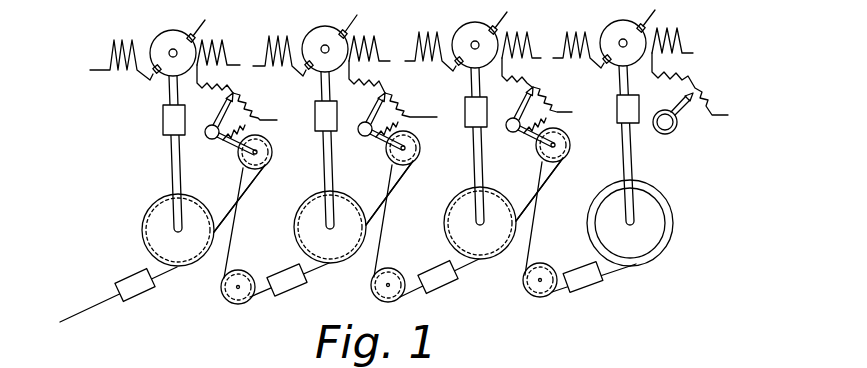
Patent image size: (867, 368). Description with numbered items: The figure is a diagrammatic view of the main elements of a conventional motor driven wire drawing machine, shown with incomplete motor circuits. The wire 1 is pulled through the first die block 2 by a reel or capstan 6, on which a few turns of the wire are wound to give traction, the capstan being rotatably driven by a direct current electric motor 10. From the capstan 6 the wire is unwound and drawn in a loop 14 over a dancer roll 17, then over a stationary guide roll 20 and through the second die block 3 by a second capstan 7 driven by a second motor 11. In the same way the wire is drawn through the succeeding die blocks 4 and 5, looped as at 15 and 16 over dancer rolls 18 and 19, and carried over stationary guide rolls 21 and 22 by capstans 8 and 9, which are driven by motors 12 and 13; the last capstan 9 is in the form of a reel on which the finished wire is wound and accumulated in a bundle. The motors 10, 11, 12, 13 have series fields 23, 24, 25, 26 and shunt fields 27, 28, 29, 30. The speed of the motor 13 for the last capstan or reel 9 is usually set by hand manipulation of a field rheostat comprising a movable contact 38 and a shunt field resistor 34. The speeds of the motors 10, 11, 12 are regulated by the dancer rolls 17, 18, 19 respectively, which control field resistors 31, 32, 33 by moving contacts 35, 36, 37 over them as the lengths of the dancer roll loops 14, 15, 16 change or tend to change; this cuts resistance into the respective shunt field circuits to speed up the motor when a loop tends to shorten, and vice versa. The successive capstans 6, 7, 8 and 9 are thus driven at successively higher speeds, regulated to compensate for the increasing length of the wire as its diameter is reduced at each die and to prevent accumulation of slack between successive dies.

The wire 1 is at (97, 302).
The first die block 2 is at (142, 292).
The second die block 3 is at (289, 290).
The die block 4 is at (441, 287).
The die block 5 is at (586, 285).
The capstan 6 is at (150, 229).
The second capstan 7 is at (294, 225).
The capstan 8 is at (444, 222).
The last capstan 9 is at (600, 212).
The direct current electric motor 10 is at (172, 38).
The second motor 11 is at (326, 36).
The motor 12 is at (474, 33).
The motor 13 is at (622, 32).
The loop 14 is at (250, 188).
The loop 15 is at (402, 183).
The loop 16 is at (550, 174).
The dancer roll 17 is at (272, 152).
The dancer roll 18 is at (421, 149).
The dancer roll 19 is at (570, 145).
The stationary guide roll 20 is at (221, 289).
The stationary guide roll 21 is at (371, 287).
The stationary guide roll 22 is at (523, 282).
The series field 23 is at (117, 42).
The series field 24 is at (274, 38).
The series field 25 is at (425, 36).
The series field 26 is at (571, 36).
The shunt field 27 is at (212, 40).
The shunt field 28 is at (366, 40).
The shunt field 29 is at (517, 38).
The shunt field 30 is at (672, 36).
The field resistor 31 is at (240, 98).
The field resistor 32 is at (396, 100).
The field resistor 33 is at (549, 99).
The shunt field resistor 34 is at (698, 90).
The moving contact 35 is at (220, 110).
The moving contact 36 is at (371, 108).
The moving contact 37 is at (519, 106).
The movable contact 38 is at (678, 107).